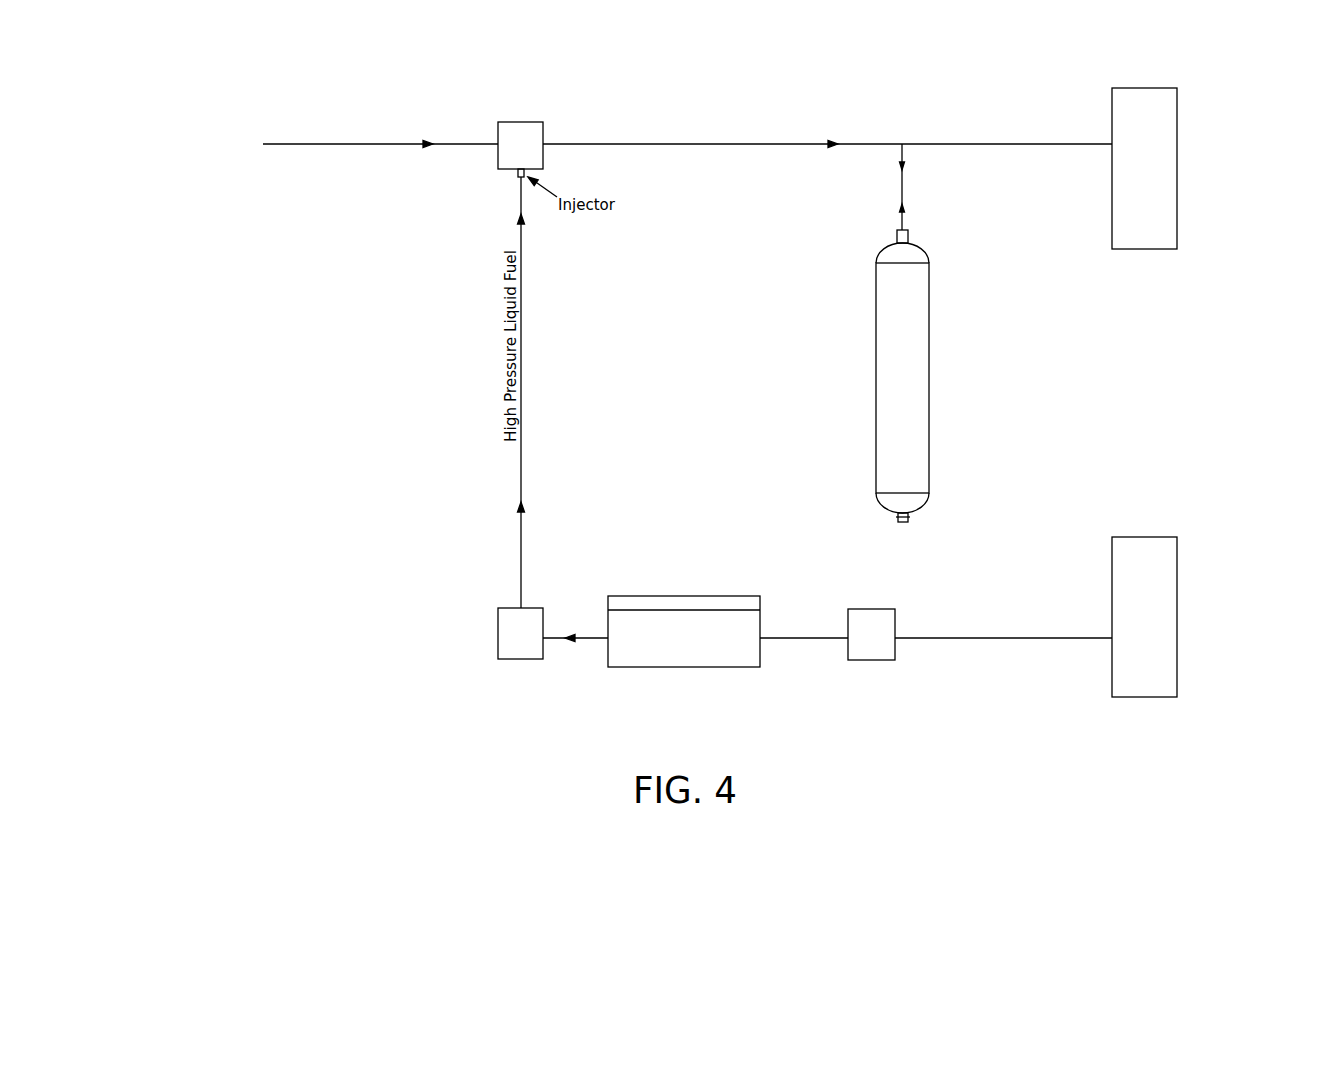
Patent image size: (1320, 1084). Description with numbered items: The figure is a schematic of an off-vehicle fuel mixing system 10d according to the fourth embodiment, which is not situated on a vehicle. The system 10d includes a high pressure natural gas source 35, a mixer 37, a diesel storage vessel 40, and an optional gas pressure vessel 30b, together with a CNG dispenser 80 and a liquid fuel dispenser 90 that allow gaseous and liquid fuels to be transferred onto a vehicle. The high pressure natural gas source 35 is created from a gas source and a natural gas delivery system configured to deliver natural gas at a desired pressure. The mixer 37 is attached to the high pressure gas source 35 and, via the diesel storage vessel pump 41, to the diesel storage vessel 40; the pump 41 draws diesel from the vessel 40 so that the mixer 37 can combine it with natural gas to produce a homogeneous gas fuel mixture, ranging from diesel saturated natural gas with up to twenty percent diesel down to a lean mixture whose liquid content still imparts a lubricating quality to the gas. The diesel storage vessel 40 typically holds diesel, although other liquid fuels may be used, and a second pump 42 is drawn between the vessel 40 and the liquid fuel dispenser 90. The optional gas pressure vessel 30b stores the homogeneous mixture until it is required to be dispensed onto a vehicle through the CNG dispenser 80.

The fuel mixing system 10d is at (905, 93).
The high pressure natural gas source 35 is at (297, 152).
The mixer 37 is at (512, 132).
The gas pressure vessel 30b is at (901, 411).
The CNG dispenser 80 is at (1157, 114).
The liquid fuel dispenser 90 is at (1159, 578).
The diesel storage vessel 40 is at (745, 650).
The diesel storage vessel pump 41 is at (512, 624).
The pump 42 is at (866, 620).